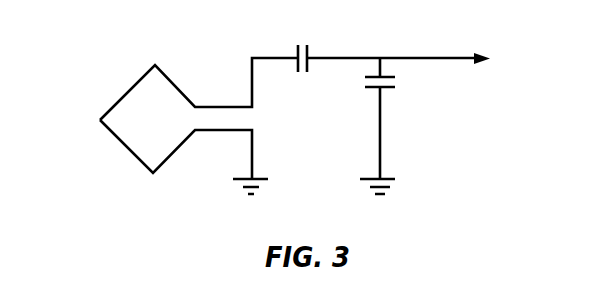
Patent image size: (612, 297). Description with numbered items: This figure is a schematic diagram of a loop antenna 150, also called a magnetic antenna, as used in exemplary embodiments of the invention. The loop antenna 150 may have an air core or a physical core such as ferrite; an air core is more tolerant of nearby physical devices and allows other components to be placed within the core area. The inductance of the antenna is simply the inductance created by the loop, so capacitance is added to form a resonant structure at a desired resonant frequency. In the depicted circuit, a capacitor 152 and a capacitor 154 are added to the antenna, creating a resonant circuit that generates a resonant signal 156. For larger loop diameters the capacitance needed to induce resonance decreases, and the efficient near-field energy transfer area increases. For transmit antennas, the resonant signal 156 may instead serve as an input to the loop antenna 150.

The loop antenna 150 is at (125, 93).
The capacitor 152 is at (308, 51).
The capacitor 154 is at (393, 90).
The resonant signal 156 is at (412, 58).